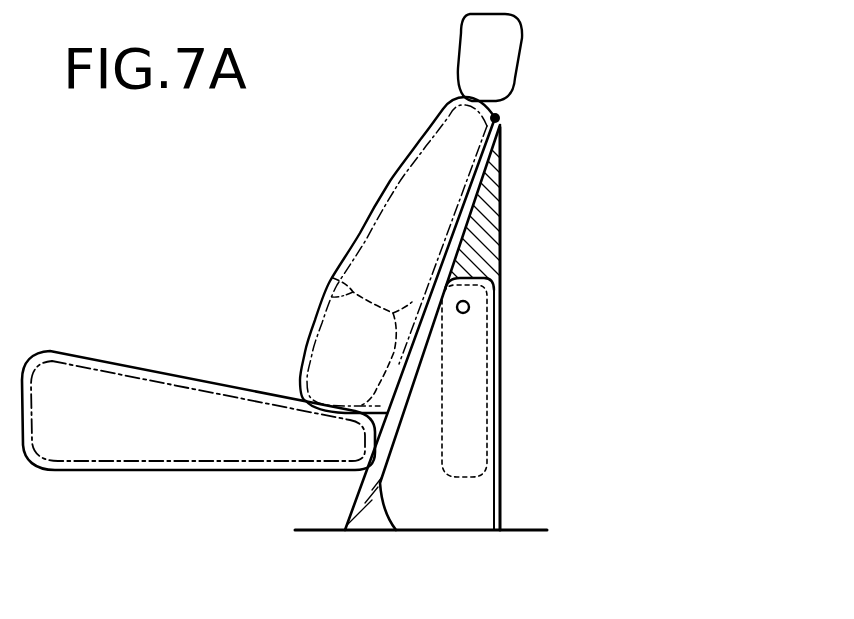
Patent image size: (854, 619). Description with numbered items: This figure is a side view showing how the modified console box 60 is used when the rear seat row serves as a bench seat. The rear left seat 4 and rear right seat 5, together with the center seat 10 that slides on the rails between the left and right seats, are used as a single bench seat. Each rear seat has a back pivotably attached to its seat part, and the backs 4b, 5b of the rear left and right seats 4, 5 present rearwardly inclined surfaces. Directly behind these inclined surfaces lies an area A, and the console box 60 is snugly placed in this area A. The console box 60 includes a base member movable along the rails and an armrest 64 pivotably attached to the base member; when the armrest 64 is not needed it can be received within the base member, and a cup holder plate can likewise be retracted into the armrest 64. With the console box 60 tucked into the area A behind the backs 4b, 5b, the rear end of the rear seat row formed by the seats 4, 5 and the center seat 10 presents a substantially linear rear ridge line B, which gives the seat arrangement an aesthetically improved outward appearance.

The rear left seat 4 is at (198, 320).
The rear right seat 5 is at (198, 320).
The center seat 10 is at (160, 375).
The back 4b is at (327, 285).
The back 5b is at (333, 278).
The area A is at (469, 250).
The ridge line B is at (500, 117).
The console box 60 is at (497, 443).
The armrest 64 is at (478, 354).